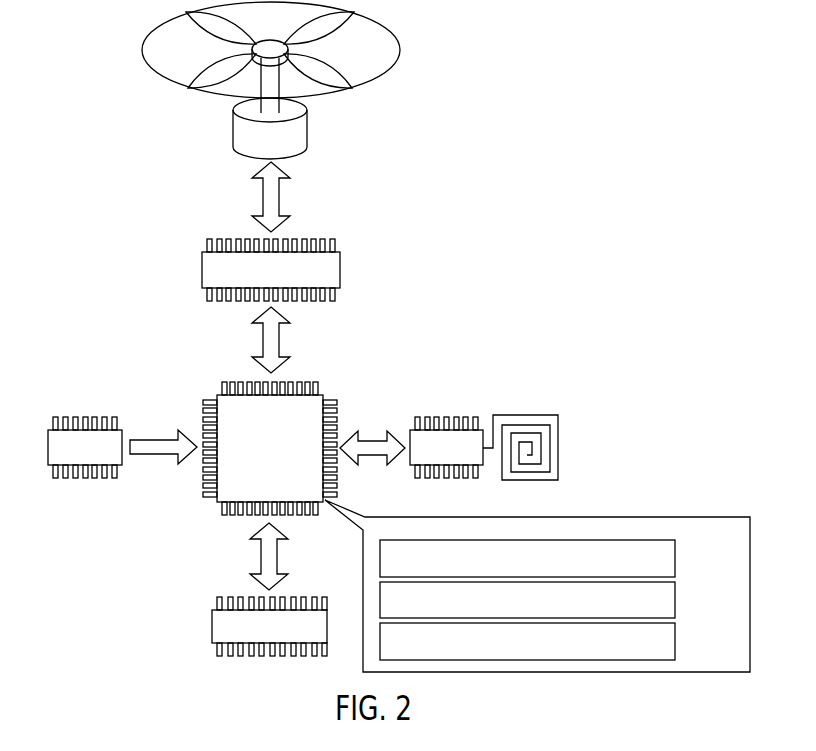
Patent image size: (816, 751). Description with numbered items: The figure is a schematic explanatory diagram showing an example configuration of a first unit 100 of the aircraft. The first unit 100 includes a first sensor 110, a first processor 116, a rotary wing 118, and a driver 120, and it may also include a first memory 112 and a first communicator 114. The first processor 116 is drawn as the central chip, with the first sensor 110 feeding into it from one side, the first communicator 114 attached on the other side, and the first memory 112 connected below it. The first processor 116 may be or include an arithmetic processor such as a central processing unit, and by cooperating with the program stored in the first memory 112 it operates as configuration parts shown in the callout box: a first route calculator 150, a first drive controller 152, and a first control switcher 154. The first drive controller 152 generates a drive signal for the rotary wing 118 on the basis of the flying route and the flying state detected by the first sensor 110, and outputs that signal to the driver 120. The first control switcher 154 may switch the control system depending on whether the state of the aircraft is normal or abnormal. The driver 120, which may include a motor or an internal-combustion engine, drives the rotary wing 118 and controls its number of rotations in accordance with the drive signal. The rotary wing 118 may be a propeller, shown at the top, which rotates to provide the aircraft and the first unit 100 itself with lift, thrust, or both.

The first unit 100 is at (500, 214).
The first sensor 110 is at (68, 457).
The first memory 112 is at (253, 637).
The first communicator 114 is at (430, 457).
The first processor 116 is at (253, 458).
The rotary wing 118 is at (253, 148).
The driver 120 is at (254, 280).
The first route calculator 150 is at (677, 558).
The first drive controller 152 is at (677, 600).
The first control switcher 154 is at (677, 641).